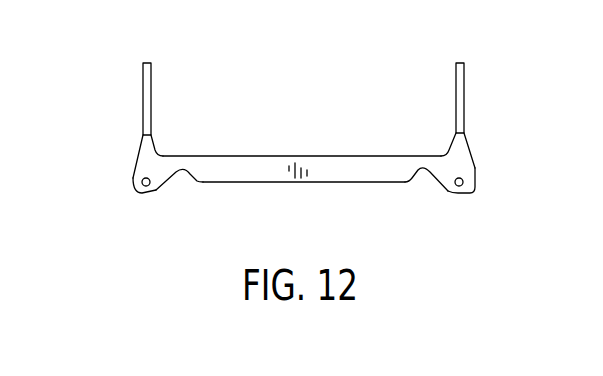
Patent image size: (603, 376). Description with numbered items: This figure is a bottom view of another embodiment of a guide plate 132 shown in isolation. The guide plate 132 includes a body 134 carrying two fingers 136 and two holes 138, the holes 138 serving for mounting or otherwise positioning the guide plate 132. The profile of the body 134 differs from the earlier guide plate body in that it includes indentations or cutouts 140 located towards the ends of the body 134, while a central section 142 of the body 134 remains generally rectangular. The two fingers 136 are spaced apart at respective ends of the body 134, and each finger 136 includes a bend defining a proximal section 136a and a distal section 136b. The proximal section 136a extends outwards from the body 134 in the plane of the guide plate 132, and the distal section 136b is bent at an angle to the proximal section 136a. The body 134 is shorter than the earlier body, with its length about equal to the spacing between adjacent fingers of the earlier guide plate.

The guide plate 132 is at (327, 148).
The body 134 is at (248, 173).
The fingers 136 is at (460, 92).
The proximal section 136a is at (153, 145).
The distal section 136b is at (146, 83).
The holes 138 is at (143, 179).
The indentations or cutouts 140 is at (180, 175).
The central section 142 is at (333, 173).